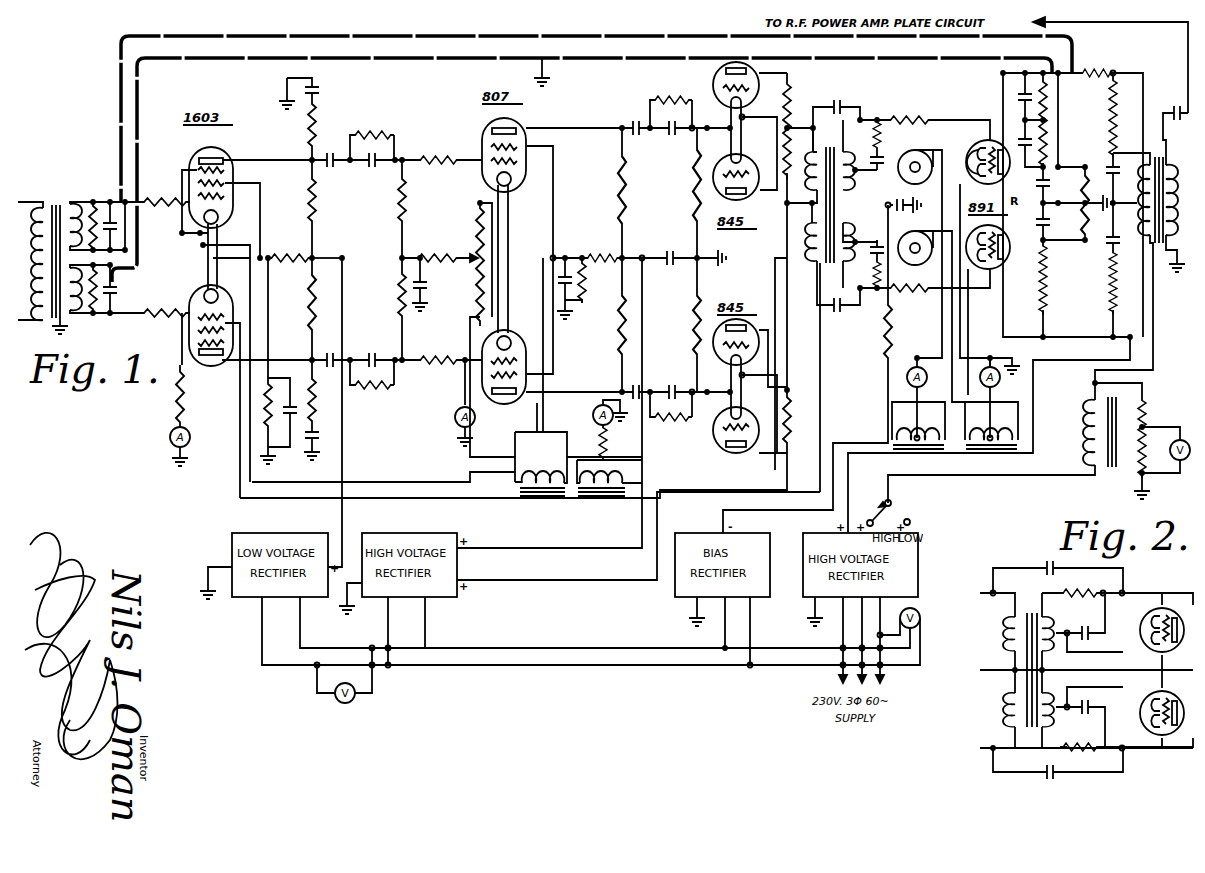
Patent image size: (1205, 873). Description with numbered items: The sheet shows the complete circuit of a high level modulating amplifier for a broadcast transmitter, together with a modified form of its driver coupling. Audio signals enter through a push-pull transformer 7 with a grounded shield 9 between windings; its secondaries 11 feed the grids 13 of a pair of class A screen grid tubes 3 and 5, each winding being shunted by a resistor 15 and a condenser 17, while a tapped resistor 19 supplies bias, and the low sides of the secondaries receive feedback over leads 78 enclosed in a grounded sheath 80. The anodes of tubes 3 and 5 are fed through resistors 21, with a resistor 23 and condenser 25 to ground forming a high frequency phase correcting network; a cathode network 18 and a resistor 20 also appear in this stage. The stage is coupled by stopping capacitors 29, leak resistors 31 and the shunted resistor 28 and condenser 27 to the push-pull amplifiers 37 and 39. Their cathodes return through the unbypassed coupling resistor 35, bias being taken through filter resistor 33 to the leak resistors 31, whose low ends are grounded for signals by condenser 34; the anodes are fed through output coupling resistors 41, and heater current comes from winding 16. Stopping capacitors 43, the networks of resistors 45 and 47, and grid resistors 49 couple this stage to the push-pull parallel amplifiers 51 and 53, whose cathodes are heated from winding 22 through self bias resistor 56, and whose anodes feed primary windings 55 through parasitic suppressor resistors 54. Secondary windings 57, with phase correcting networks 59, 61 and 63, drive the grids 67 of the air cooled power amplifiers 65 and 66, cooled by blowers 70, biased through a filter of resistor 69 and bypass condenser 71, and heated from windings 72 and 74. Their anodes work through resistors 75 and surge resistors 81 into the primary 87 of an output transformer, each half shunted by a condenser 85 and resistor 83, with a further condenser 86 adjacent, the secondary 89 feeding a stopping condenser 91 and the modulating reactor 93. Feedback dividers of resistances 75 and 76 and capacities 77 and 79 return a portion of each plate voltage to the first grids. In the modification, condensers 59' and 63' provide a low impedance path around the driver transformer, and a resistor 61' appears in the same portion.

In FIG. 1, the class A push-pull screen grid tube 3 is at (189, 152).
In FIG. 1, the class A push-pull screen grid tube 5 is at (226, 366).
In FIG. 1, the push-pull transformer 7 is at (53, 153).
In FIG. 1, the grounded shield 9 is at (62, 203).
In FIG. 1, the secondary winding 11 is at (93, 203).
In FIG. 1, the grid 13 is at (230, 200).
In FIG. 1, the resistor 15 is at (110, 215).
In FIG. 1, the transformer secondary winding 16 is at (520, 488).
In FIG. 1, the condenser 17 is at (120, 270).
In FIG. 1, the cathode resistor and condenser 18 is at (270, 378).
In FIG. 1, the tapped or adjustable resistor 19 is at (178, 395).
In FIG. 1, the resistor 20 is at (303, 252).
In FIG. 1, the resistor 21 is at (310, 198).
In FIG. 1, the secondary winding 22 is at (624, 486).
In FIG. 1, the resistor 23 is at (316, 128).
In FIG. 1, the condenser 25 is at (320, 90).
In FIG. 1, the condenser 27 is at (371, 170).
In FIG. 1, the resistor 28 is at (372, 128).
In FIG. 1, the stopping capacitor 29 is at (332, 172).
In FIG. 1, the leak resistor 31 is at (406, 210).
In FIG. 1, the filter resistor 33 is at (448, 255).
In FIG. 1, the condenser 34 is at (433, 284).
In FIG. 1, the bias and coupling resistor 35 is at (478, 210).
In FIG. 1, the push-pull amplifier tube 37 is at (527, 130).
In FIG. 1, the push-pull amplifier tube 39 is at (522, 400).
In FIG. 1, the output coupling resistor 41 is at (620, 190).
In FIG. 1, the stopping capacitor 43 is at (634, 118).
In FIG. 1, the resistor 45 is at (670, 99).
In FIG. 1, the resistor 47 is at (673, 140).
In FIG. 1, the grid resistor 49 is at (695, 192).
In FIG. 1, the push-pull parallel connected amplifier 51 is at (724, 150).
In FIG. 1, the push-pull parallel connected amplifier 53 is at (710, 366).
In FIG. 1, the parasitic suppressor resistor 54 is at (789, 85).
In FIG. 1, the primary winding 55 is at (814, 180).
In FIG. 1, the self bias resistor 56 is at (605, 442).
In FIG. 1, the secondary winding 57 is at (852, 118).
In FIG. 2, the secondary winding 57 is at (1055, 645).
In FIG. 1, the high frequency phase correcting network 59 is at (839, 207).
In FIG. 1, the high frequency phase correcting network 61 is at (884, 204).
In FIG. 1, the high frequency phase correcting network 63 is at (873, 205).
In FIG. 1, the power amplifier 65 is at (980, 140).
In FIG. 2, the power amplifier 65 is at (1168, 610).
In FIG. 1, the power amplifier 66 is at (986, 290).
In FIG. 2, the power amplifier 66 is at (1166, 738).
In FIG. 1, the grid 67 is at (985, 150).
In FIG. 1, the resistor 69 is at (890, 333).
In FIG. 1, the blower 70 is at (920, 258).
In FIG. 1, the bypass condenser 71 is at (908, 206).
In FIG. 1, the winding 72 is at (918, 410).
In FIG. 1, the winding 74 is at (992, 405).
In FIG. 1, the resistance 75 is at (1048, 125).
In FIG. 1, the resistance 76 is at (1084, 176).
In FIG. 1, the capacity 77 is at (1023, 97).
In FIG. 1, the lead 78 is at (1040, 36).
In FIG. 1, the capacity 79 is at (1040, 183).
In FIG. 1, the grounded sheath 80 is at (970, 58).
In FIG. 1, the resistor 81 is at (1098, 70).
In FIG. 1, the resistor 83 is at (1110, 120).
In FIG. 1, the condenser 85 is at (1110, 243).
In FIG. 1, the condenser 86 is at (1118, 170).
In FIG. 1, the primary 87 is at (1154, 285).
In FIG. 1, the secondary 89 is at (1164, 170).
In FIG. 1, the stopping condenser 91 is at (1173, 108).
In FIG. 1, the modulating reactor 93 is at (1088, 415).
In FIG. 2, the condenser 59' is at (1057, 676).
In FIG. 2, the resistor 61' is at (1117, 670).
In FIG. 2, the condenser 63' is at (1103, 661).